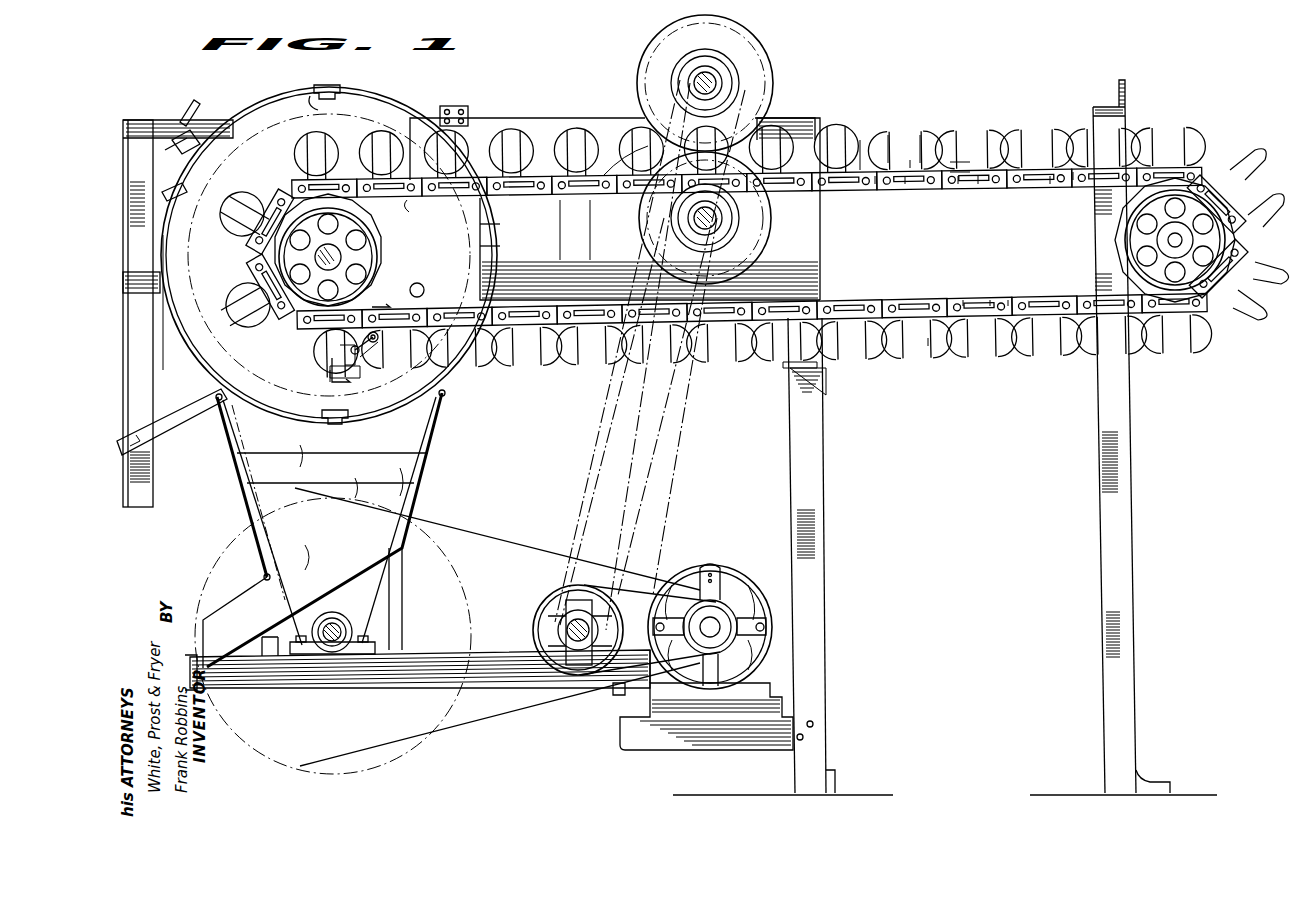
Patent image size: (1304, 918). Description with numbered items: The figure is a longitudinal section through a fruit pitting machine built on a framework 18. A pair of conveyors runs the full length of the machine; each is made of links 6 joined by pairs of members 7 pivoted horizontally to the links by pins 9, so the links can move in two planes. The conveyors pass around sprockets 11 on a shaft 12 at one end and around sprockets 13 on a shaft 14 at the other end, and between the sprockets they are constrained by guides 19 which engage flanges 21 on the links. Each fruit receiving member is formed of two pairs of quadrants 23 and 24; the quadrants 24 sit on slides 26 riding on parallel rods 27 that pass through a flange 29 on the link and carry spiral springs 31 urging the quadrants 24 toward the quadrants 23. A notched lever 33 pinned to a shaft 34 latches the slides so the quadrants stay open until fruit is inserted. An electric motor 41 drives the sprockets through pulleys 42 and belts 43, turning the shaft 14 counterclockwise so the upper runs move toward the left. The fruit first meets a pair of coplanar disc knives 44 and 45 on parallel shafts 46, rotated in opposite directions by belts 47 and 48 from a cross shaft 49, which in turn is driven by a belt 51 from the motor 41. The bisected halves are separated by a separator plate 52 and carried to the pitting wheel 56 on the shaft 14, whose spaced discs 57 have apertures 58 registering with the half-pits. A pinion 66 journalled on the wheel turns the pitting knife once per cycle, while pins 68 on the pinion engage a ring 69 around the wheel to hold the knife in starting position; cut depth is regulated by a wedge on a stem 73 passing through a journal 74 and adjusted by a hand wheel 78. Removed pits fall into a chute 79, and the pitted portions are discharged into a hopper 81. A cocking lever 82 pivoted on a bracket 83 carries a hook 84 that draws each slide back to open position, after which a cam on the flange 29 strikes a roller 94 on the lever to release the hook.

The links 6 is at (910, 184).
The members 7 is at (878, 183).
The pins 9 is at (1027, 183).
The sprockets 11 is at (1127, 236).
The shaft 12 is at (1170, 241).
The sprockets 13 is at (379, 236).
The shaft 14 is at (334, 252).
The framework 18 is at (143, 488).
The guides 19 is at (541, 184).
The flanges 21 is at (962, 183).
The quadrants 23 is at (890, 148).
The quadrants 24 is at (922, 157).
The slides 26 is at (913, 164).
The rods 27 is at (602, 176).
The flange 29 is at (872, 173).
The spiral springs 31 is at (932, 348).
The lever 33 is at (957, 162).
The shaft 34 is at (955, 173).
The electric motor 41 is at (743, 582).
The pulleys 42 is at (464, 577).
The belts 43 is at (496, 540).
The disc knife 44 is at (645, 106).
The disc knife 45 is at (645, 227).
The shafts 46 is at (700, 81).
The belt 47 is at (614, 398).
The belt 48 is at (680, 400).
The cross shaft 49 is at (566, 631).
The belt 51 is at (632, 590).
The separator plate 52 is at (558, 126).
The wheel 56 is at (495, 228).
The discs 57 is at (495, 247).
The apertures 58 is at (410, 202).
The pinion 66 is at (307, 104).
The pins 68 is at (303, 91).
The ring 69 is at (345, 91).
The stem 73 is at (198, 147).
The journal 74 is at (200, 133).
The hand wheel 78 is at (178, 122).
The chute 79 is at (170, 424).
The hopper 81 is at (424, 448).
The lever 82 is at (360, 350).
The bracket 83 is at (326, 368).
The hook 84 is at (378, 339).
The roller 94 is at (340, 362).